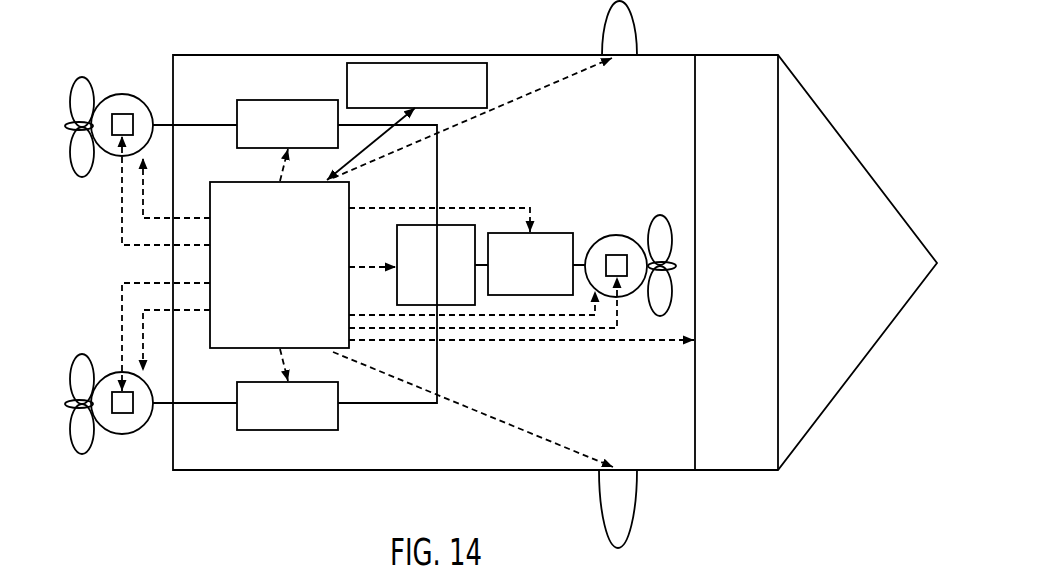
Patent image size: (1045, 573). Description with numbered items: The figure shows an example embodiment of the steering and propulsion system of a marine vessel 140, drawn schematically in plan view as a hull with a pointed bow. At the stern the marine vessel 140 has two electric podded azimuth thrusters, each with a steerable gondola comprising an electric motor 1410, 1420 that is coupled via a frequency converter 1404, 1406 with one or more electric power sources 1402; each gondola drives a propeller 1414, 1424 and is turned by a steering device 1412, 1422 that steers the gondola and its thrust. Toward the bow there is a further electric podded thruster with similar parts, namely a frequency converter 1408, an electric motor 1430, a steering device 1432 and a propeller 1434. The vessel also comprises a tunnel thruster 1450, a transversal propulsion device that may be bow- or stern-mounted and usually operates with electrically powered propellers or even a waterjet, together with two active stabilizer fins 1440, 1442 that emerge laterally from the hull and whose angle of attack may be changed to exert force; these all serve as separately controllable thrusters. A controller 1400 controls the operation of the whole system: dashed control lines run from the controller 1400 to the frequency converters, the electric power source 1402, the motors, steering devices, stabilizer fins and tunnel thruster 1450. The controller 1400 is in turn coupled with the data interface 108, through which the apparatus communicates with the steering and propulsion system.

The data interface 108 is at (393, 99).
The marine vessel 140 is at (320, 470).
The controller 1400 is at (277, 281).
The electric power source 1402 is at (457, 259).
The frequency converter 1404 is at (298, 137).
The frequency converter 1406 is at (298, 419).
The frequency converter 1408 is at (552, 264).
The electric motor 1410 is at (143, 102).
The steering device 1412 is at (122, 114).
The propeller 1414 is at (82, 77).
The electric motor 1420 is at (143, 426).
The steering device 1422 is at (122, 413).
The propeller 1424 is at (82, 455).
The electric motor 1430 is at (600, 240).
The steering device 1432 is at (618, 255).
The propeller 1434 is at (657, 216).
The active stabilizer fin 1440 is at (637, 42).
The active stabilizer fin 1442 is at (637, 493).
The tunnel thruster 1450 is at (758, 244).